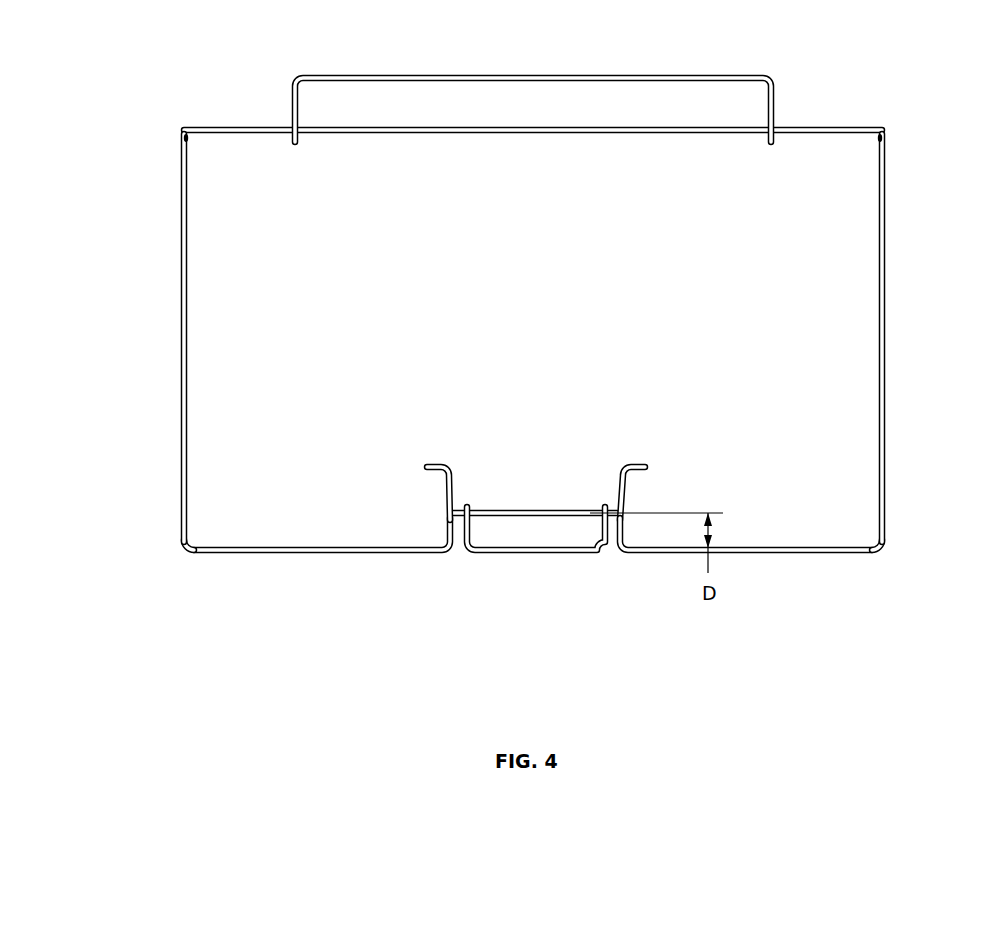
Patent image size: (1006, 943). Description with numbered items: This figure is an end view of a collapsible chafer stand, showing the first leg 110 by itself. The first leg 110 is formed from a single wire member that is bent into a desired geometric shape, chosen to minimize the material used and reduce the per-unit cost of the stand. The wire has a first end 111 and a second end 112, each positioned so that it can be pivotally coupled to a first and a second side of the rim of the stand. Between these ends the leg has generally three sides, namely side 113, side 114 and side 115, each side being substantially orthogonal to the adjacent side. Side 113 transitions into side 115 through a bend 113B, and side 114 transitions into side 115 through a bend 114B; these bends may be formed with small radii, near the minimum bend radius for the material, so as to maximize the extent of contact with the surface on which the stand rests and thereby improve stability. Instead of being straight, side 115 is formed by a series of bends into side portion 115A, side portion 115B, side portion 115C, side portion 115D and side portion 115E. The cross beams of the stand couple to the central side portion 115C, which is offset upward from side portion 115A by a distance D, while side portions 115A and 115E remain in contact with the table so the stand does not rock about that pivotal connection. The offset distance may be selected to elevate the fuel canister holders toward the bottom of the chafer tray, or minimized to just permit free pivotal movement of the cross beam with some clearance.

The first leg 110 is at (535, 387).
The first end 111 is at (183, 138).
The second end 112 is at (884, 138).
The side 113 is at (178, 362).
The bend 113B is at (181, 553).
The side 114 is at (886, 362).
The bend 114B is at (887, 553).
The side 115 is at (533, 582).
The side portion 115A is at (746, 561).
The side portion 115B is at (623, 532).
The side portion 115C is at (505, 516).
The side portion 115D is at (447, 530).
The side portion 115E is at (245, 553).